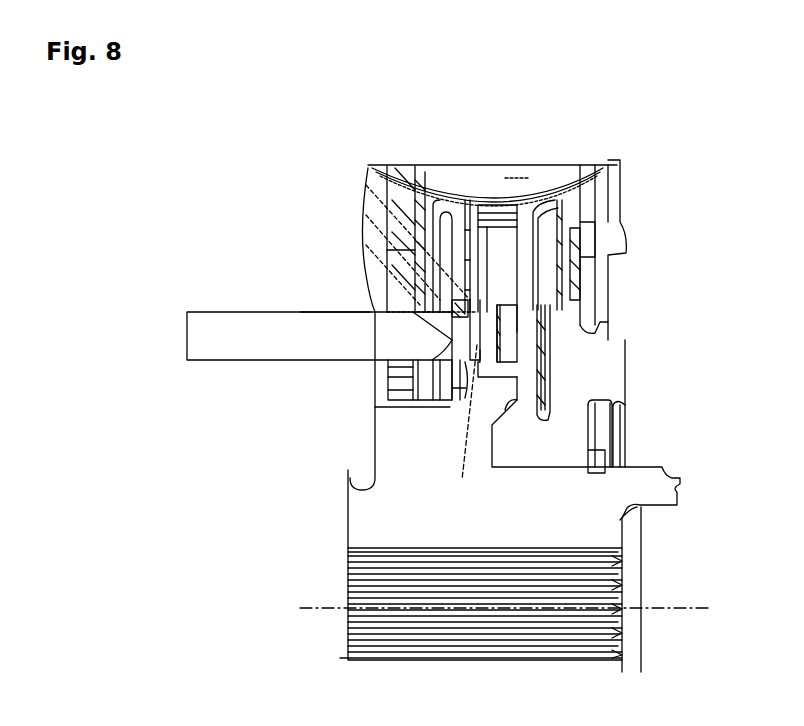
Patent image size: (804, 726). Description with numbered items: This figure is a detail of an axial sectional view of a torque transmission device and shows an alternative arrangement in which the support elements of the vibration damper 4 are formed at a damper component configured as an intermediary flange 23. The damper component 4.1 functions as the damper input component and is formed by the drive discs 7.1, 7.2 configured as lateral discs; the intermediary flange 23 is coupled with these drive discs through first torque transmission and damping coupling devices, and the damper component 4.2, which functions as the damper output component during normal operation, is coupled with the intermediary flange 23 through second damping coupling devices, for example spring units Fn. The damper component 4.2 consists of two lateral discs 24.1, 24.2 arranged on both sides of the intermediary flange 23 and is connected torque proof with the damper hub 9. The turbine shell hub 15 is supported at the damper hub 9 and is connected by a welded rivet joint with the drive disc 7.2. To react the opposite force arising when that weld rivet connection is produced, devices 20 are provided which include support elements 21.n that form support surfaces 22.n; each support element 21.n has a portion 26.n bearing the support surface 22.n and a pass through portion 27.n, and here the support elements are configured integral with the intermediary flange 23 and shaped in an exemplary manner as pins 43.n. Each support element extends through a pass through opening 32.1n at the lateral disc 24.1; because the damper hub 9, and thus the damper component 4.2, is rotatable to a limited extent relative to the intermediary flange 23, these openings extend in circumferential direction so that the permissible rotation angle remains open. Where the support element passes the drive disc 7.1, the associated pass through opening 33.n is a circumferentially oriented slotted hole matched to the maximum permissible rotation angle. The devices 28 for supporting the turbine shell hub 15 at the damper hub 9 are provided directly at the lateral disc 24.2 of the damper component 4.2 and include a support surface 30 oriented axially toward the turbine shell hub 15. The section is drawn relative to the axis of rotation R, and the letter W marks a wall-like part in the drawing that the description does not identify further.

The vibration damper 4 is at (512, 108).
The damper component 4.1 is at (400, 188).
The drive disc 7.1 is at (410, 167).
The lateral disc 24.1 is at (440, 167).
The intermediary flange 23 is at (493, 167).
The spring units Fn is at (520, 163).
The lateral disc 24.2 is at (553, 163).
The damper component 4.2 is at (568, 178).
The drive disc 7.2 is at (600, 177).
The pass through opening 32.1n is at (445, 300).
The devices 20 is at (460, 312).
The pass through opening 33.n is at (410, 305).
The support surface 22.n is at (405, 305).
The wall W is at (218, 330).
The devices 28 is at (555, 290).
The turbine shell hub 15 is at (623, 350).
The support surface 30 is at (540, 307).
The support element 21.n is at (420, 363).
The pin 43.n is at (388, 391).
The portion bearing the support surface 26.n is at (460, 358).
The damper hub 9 is at (400, 510).
The axis of rotation R is at (330, 612).
The pass through portion 27.n is at (478, 345).